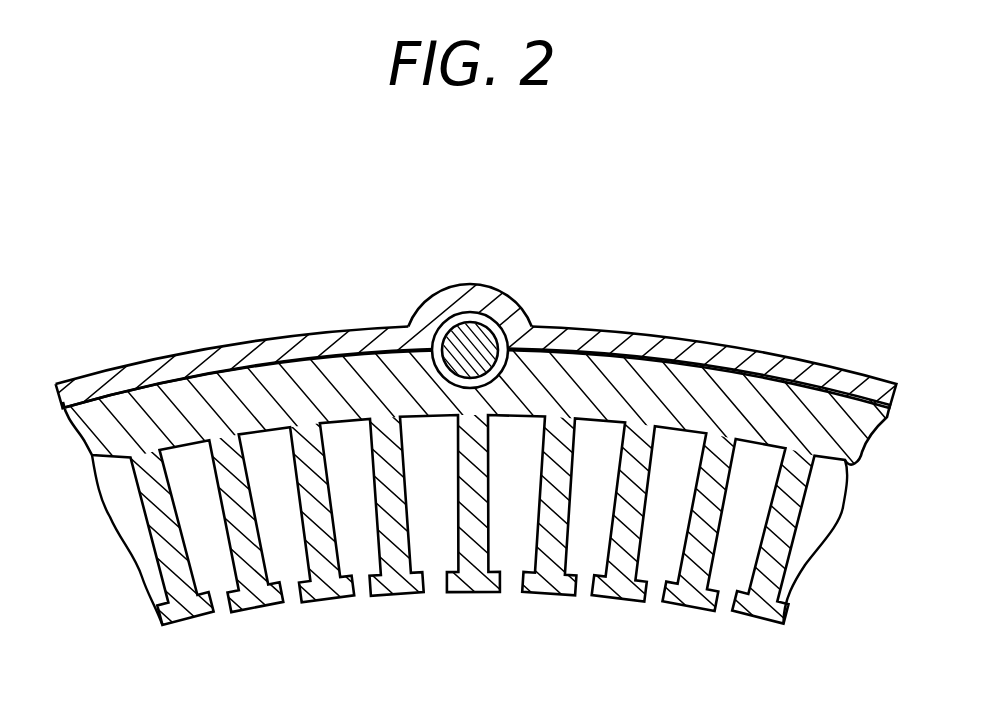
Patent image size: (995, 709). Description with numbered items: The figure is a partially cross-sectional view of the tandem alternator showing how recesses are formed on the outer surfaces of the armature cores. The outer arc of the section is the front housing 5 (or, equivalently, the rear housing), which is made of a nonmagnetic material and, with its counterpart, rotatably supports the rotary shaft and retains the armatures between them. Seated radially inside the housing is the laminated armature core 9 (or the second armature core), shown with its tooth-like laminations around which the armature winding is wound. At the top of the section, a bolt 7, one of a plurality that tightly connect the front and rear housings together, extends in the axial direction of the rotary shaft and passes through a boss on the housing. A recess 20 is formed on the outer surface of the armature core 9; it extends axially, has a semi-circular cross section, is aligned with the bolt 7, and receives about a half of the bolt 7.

The front housing 5 is at (289, 346).
The bolt 7 is at (470, 338).
The laminated armature core 9 is at (203, 382).
The recess 20 is at (478, 330).